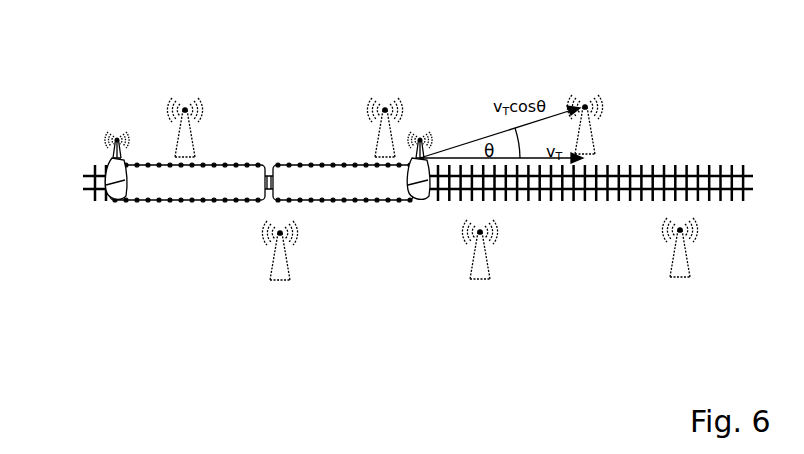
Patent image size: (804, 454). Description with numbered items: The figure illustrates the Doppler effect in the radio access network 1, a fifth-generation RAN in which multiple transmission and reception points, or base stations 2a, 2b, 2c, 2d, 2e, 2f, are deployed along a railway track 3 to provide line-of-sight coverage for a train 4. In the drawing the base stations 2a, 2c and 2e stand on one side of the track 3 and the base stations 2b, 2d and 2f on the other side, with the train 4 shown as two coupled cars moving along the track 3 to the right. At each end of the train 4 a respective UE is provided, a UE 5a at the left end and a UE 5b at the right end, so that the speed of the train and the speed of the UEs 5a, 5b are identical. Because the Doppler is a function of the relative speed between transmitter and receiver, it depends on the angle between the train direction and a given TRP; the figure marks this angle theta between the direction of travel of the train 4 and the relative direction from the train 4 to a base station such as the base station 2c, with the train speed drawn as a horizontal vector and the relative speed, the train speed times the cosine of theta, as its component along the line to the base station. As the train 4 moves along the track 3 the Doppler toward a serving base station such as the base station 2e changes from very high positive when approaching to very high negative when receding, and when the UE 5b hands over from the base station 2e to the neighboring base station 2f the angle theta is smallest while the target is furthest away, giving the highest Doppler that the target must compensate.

The radio access network 1 is at (142, 38).
The base station 2a is at (190, 136).
The base station 2b is at (288, 270).
The base station 2c is at (391, 137).
The base station 2d is at (488, 268).
The base station 2e is at (592, 137).
The base station 2f is at (688, 265).
The railway track 3 is at (692, 164).
The train 4 is at (143, 201).
The UE 5a is at (105, 186).
The UE 5b is at (421, 200).